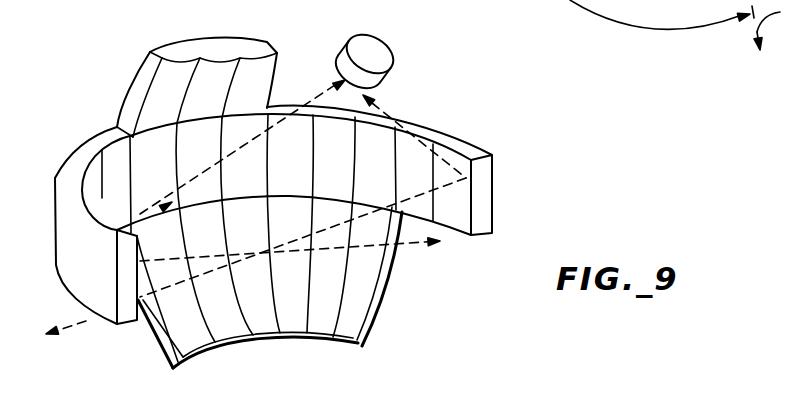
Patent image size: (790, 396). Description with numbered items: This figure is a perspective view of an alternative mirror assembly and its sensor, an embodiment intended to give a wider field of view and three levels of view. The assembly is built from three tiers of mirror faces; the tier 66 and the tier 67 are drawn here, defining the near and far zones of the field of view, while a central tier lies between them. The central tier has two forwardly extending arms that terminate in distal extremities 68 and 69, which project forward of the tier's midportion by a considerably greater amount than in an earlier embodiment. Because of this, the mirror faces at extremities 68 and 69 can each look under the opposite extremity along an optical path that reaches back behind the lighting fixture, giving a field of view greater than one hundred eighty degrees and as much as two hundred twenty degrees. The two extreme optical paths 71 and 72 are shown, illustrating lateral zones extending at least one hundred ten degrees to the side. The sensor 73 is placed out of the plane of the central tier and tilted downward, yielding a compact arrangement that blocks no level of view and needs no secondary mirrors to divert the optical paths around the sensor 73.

The mirror face tier 66 is at (206, 43).
The mirror face tier 67 is at (348, 310).
The distal extremity 68 is at (122, 312).
The distal extremity 69 is at (495, 197).
The extreme optical path 71 is at (421, 248).
The extreme optical path 72 is at (86, 322).
The sensor 73 is at (372, 50).